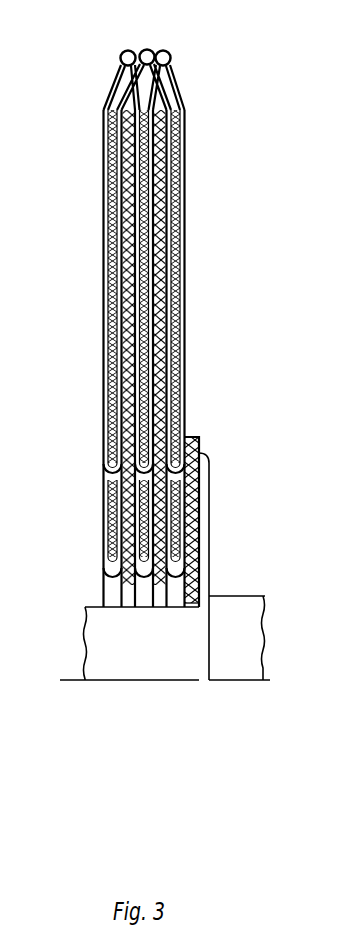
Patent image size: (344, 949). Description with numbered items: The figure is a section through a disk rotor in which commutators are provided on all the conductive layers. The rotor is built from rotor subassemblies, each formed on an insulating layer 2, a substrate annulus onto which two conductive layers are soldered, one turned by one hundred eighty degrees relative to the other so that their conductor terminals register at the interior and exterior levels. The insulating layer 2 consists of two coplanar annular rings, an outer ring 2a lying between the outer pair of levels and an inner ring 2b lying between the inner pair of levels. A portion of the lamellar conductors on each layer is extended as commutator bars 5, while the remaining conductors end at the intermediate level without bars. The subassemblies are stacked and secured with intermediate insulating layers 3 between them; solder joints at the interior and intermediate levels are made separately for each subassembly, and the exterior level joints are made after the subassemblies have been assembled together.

The insulating layer 2 is at (197, 485).
The outer ring 2a is at (180, 280).
The inner ring 2b is at (183, 548).
The intermediate insulating layer 3 is at (161, 227).
The commutator bar 5 is at (197, 530).